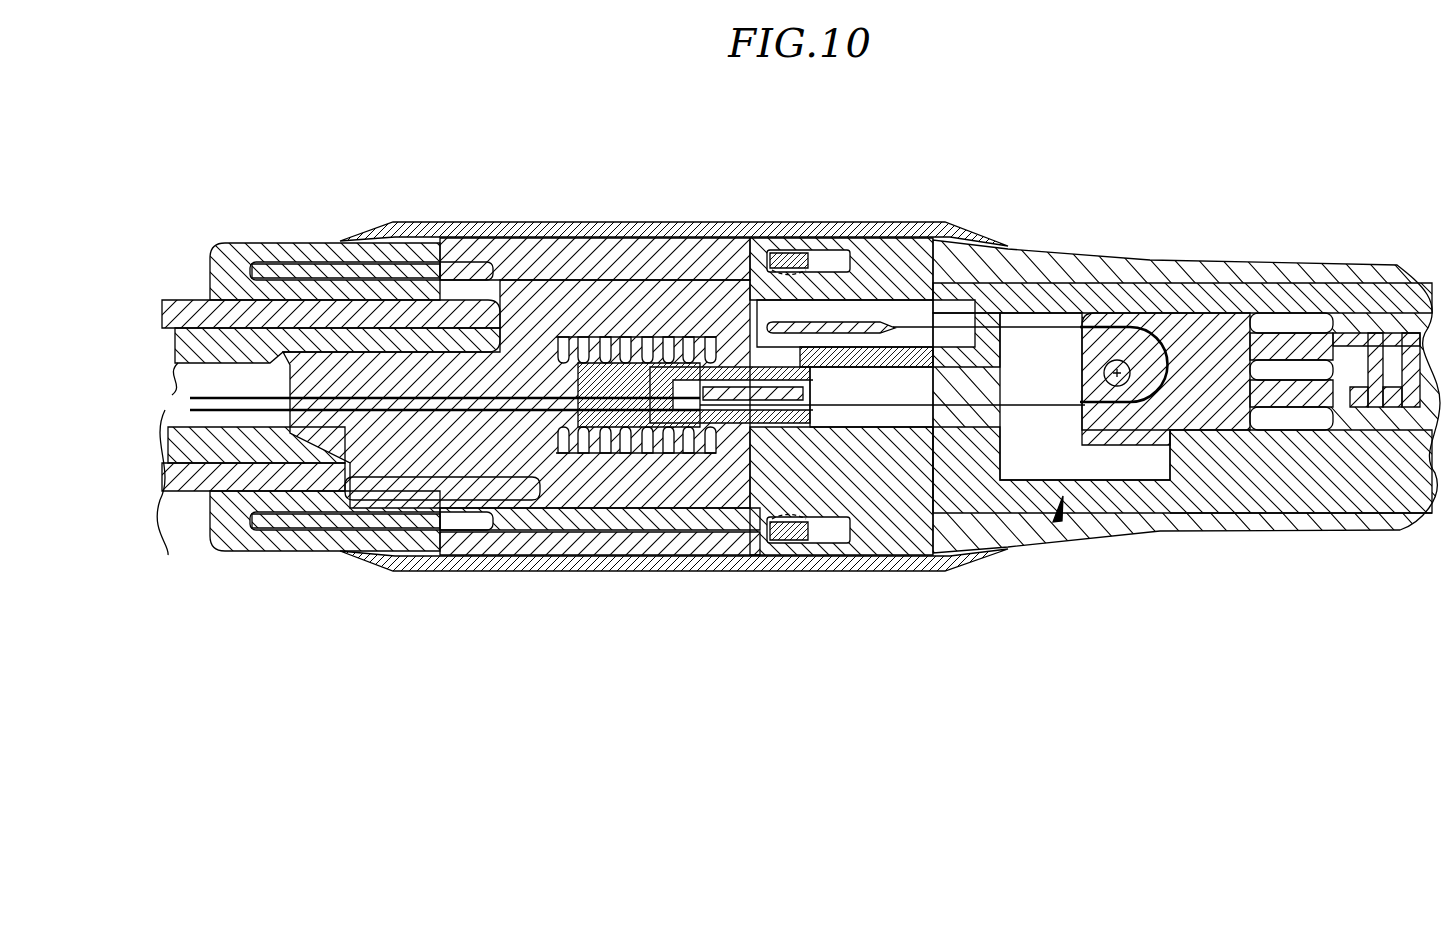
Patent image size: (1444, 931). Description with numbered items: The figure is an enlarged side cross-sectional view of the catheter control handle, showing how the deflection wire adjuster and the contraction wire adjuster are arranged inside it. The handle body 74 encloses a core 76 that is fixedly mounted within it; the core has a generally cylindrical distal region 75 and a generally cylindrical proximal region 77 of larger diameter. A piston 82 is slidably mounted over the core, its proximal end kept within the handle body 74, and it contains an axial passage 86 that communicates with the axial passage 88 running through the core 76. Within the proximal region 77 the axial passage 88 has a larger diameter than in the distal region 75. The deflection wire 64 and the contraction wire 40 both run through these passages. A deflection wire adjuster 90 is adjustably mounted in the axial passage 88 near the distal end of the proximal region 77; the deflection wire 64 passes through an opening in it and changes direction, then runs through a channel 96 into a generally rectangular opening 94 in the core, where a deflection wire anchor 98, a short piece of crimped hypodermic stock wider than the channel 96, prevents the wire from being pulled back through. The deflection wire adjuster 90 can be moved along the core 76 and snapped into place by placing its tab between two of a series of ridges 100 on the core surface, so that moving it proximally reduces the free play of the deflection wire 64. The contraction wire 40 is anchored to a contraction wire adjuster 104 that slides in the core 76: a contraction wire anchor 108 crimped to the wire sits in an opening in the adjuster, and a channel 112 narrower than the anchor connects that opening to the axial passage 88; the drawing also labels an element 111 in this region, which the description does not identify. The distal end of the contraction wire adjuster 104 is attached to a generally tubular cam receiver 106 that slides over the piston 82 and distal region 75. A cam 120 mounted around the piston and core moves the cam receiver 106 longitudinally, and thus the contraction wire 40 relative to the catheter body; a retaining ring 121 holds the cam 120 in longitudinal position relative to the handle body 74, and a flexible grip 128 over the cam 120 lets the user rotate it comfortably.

The contraction wire 40 is at (232, 396).
The deflection wire 64 is at (1125, 283).
The handle body 74 is at (1150, 270).
The distal region 75 is at (205, 494).
The core 76 is at (1060, 500).
The proximal region 77 is at (1222, 482).
The piston 82 is at (205, 300).
The axial passage 86 is at (172, 551).
The axial passage 88 is at (875, 552).
The deflection wire adjuster 90 is at (1200, 330).
The generally rectangular opening 94 is at (818, 322).
The channel 96 is at (990, 332).
The deflection wire anchor 98 is at (968, 300).
The ridges 100 is at (1385, 350).
The contraction wire adjuster 104 is at (563, 356).
The cam receiver 106 is at (540, 340).
The contraction wire anchor 108 is at (672, 440).
The plunger housing 111 is at (793, 440).
The channel 112 is at (668, 440).
The cam 120 is at (312, 555).
The retaining ring 121 is at (786, 252).
The flexible grip 128 is at (665, 222).